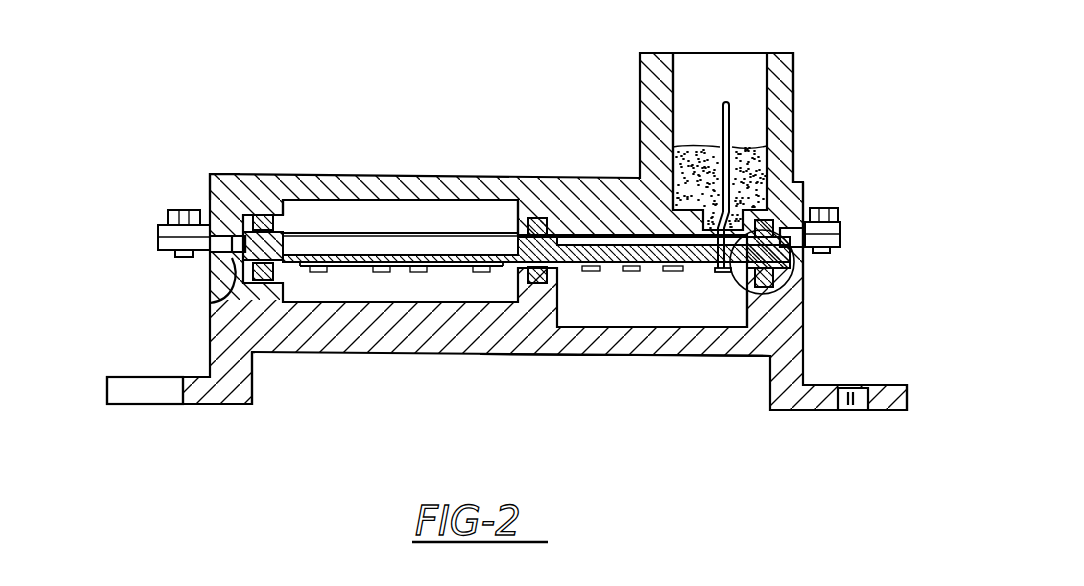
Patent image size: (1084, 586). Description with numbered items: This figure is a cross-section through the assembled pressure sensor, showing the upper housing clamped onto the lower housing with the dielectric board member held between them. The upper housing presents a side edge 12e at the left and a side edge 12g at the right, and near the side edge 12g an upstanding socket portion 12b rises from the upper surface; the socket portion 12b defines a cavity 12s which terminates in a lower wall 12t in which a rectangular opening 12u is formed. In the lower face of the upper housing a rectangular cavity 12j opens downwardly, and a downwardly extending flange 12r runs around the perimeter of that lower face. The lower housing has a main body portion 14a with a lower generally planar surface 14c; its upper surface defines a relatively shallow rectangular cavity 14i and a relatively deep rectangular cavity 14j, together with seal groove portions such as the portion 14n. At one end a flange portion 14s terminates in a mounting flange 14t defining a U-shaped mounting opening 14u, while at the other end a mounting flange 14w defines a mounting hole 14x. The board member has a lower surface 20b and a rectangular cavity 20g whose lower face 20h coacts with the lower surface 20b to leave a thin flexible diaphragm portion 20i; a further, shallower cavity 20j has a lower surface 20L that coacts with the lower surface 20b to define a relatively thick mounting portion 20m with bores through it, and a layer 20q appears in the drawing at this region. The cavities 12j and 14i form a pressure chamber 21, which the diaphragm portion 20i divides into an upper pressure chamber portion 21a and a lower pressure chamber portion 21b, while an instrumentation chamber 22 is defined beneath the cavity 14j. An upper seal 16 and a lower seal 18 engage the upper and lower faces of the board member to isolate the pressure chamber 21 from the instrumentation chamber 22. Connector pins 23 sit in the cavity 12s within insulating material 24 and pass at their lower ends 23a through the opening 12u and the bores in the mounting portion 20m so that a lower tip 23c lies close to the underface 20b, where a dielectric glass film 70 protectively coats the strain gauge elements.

The socket portion 12b is at (793, 120).
The side edge 12e is at (210, 180).
The side edge 12g is at (803, 203).
The rectangular cavity 12j is at (505, 206).
The downwardly extending flange 12r is at (212, 313).
The cavity 12s is at (760, 72).
The lower wall 12t is at (690, 205).
The rectangular opening 12u is at (745, 207).
The main body portion 14a is at (625, 357).
The lower generally planar surface 14c is at (528, 356).
The shallow rectangular cavity 14i is at (380, 297).
The deep rectangular cavity 14j is at (735, 312).
The seal groove portion 14n is at (208, 268).
The flange portion 14s is at (243, 404).
The mounting flange 14t is at (205, 405).
The U-shaped mounting opening 14u is at (170, 392).
The mounting flange 14w is at (820, 387).
The mounting hole 14x is at (850, 413).
The upper seal 16 is at (264, 216).
The lower seal 18 is at (265, 286).
The lower surface 20b is at (410, 280).
The rectangular cavity 20g is at (290, 200).
The lower face of cavity 20h is at (405, 240).
The diaphragm portion 20i is at (356, 242).
The further cavity 20j is at (543, 216).
The lower surface of cavity 20L is at (594, 242).
The mounting portion 20m is at (687, 258).
The electrode layer 20q is at (628, 250).
The pressure chamber 21 is at (407, 281).
The upper pressure chamber portion 21a is at (468, 217).
The lower pressure chamber portion 21b is at (498, 300).
The instrumentation chamber 22 is at (706, 357).
The connector pins 23 is at (721, 103).
The lower ends of pins 23a is at (800, 287).
The lower tip 23c is at (803, 300).
The insulating material 24 is at (688, 147).
The dielectric glass film 70 is at (355, 275).